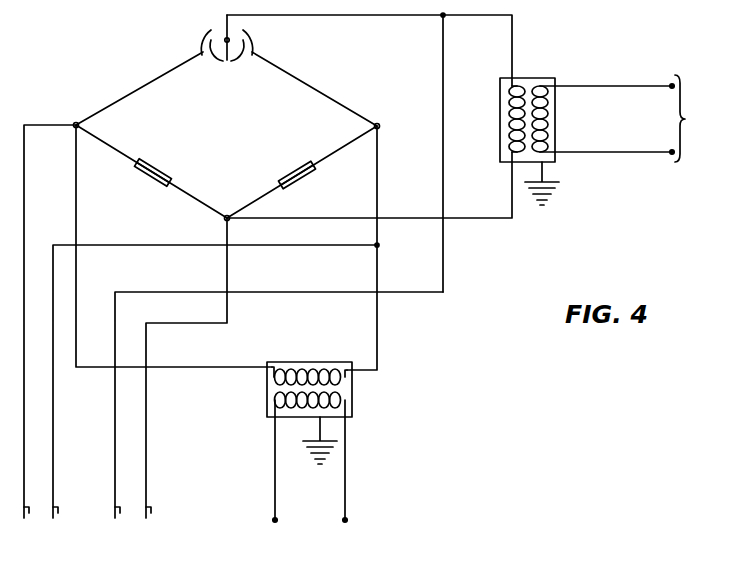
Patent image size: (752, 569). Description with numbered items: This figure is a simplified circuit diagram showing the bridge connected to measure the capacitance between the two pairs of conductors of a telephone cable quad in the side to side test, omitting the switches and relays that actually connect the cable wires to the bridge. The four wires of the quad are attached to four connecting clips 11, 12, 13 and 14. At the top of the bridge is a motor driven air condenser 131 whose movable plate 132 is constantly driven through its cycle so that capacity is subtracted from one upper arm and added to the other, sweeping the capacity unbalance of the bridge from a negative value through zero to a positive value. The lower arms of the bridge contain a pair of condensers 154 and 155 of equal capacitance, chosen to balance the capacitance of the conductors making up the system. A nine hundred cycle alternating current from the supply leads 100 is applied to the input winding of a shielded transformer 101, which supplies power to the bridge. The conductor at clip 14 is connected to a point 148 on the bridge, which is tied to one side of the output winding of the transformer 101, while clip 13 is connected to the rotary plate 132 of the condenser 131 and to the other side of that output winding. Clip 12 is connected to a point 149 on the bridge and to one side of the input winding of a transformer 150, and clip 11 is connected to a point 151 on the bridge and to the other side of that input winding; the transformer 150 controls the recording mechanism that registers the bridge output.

The connecting clip 11 is at (29, 511).
The connecting clip 12 is at (58, 511).
The connecting clip 13 is at (120, 511).
The connecting clip 14 is at (151, 511).
The supply leads 100 is at (631, 118).
The shielded transformer 101 is at (533, 78).
The motor driven air condenser 131 is at (252, 27).
The movable plate 132 is at (206, 27).
The point on the bridge 148 is at (228, 214).
The point on the bridge 149 is at (373, 127).
The transformer 150 is at (318, 363).
The point on the bridge 151 is at (80, 125).
The condenser 154 is at (289, 163).
The condenser 155 is at (157, 165).